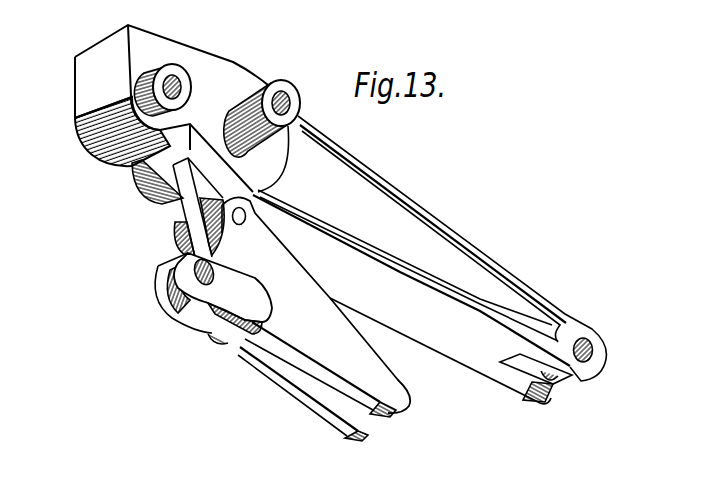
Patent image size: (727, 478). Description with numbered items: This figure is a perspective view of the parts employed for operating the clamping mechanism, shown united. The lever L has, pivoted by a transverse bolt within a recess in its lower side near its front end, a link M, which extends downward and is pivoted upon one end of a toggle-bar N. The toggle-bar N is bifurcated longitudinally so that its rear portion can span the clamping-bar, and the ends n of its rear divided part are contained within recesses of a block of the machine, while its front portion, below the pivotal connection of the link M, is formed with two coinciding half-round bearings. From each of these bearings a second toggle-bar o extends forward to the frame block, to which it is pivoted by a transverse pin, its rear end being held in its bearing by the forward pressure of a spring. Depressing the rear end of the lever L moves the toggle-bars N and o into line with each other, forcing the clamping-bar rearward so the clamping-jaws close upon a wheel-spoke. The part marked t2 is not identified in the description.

The bushing / trunnion t2 is at (240, 104).
The lever L is at (429, 248).
The toggle-bar N is at (397, 305).
The ends of rear divided part of toggle-bar n is at (317, 383).
The link M is at (192, 212).
The toggle-bar o is at (175, 327).